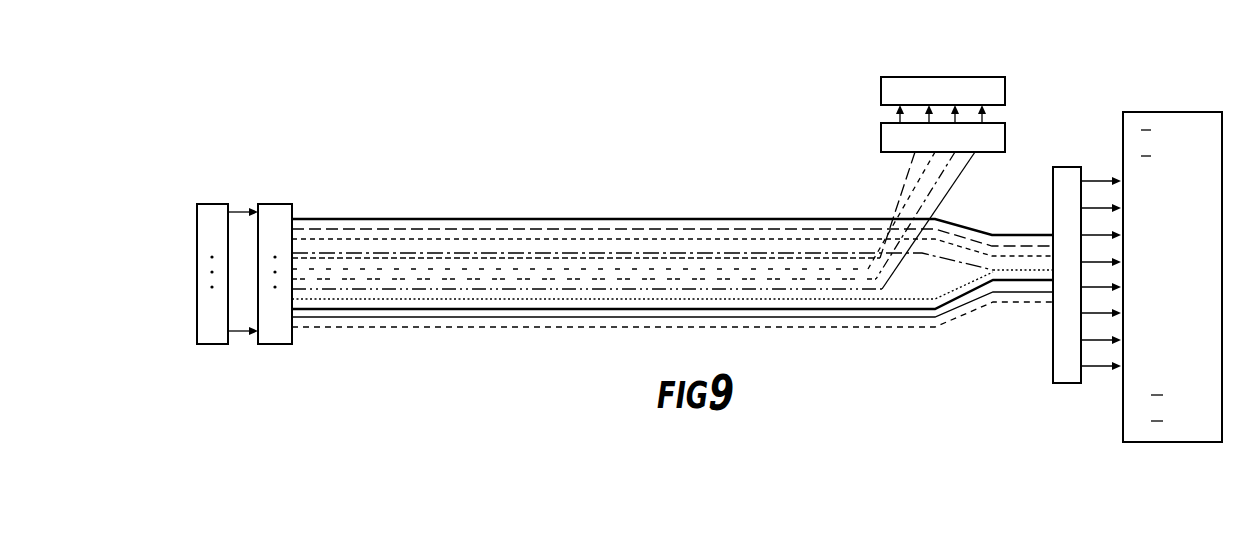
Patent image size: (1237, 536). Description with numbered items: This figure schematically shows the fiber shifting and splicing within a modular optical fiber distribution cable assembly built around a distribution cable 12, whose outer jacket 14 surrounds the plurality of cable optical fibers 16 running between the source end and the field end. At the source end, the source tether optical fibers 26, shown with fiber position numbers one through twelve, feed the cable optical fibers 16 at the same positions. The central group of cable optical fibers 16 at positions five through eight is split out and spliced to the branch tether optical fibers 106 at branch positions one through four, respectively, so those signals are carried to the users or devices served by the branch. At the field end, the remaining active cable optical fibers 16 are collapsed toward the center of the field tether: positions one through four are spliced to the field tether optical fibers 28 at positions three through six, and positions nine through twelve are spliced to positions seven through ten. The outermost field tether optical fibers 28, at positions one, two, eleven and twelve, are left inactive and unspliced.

The cable 12 is at (669, 148).
The outer jacket 14 is at (545, 190).
The cable optical fibers 16 is at (281, 204).
The source tether optical fibers 26 is at (213, 204).
The field tether optical fibers 28 is at (1121, 138).
The branch tether optical fiber 106 is at (881, 89).